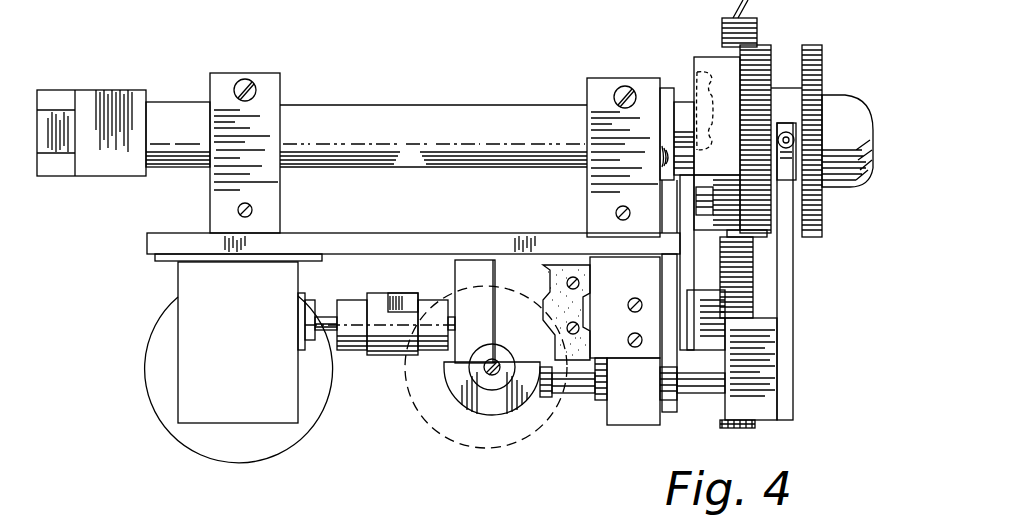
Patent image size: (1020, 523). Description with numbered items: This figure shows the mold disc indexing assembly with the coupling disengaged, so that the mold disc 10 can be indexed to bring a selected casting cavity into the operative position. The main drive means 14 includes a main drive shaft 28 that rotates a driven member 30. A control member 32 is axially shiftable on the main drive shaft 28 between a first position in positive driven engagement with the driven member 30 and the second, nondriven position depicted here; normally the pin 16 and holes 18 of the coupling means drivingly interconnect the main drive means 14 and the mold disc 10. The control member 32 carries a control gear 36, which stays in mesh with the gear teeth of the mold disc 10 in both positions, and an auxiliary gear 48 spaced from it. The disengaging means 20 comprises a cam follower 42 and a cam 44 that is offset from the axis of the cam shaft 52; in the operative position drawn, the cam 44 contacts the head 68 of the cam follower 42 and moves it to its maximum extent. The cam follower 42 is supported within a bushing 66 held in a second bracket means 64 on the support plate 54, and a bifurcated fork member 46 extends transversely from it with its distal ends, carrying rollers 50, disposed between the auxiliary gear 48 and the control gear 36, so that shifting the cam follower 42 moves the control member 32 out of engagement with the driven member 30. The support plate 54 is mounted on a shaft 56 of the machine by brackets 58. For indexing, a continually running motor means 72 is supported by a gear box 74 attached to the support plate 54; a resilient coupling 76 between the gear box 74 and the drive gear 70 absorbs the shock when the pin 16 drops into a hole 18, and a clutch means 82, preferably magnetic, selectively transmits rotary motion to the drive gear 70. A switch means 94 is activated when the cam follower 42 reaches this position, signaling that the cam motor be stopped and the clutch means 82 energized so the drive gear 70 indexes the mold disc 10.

The mold disc 10 is at (123, 306).
The main drive means 14 is at (682, 73).
The pin 16 is at (690, 148).
The holes 18 is at (710, 108).
The disengaging means 20 is at (543, 437).
The main drive shaft 28 is at (682, 176).
The driven member 30 is at (667, 88).
The control member 32 is at (845, 90).
The control gear 36 is at (772, 55).
The cam follower 42 is at (580, 383).
The cam 44 is at (465, 407).
The fork member 46 is at (792, 335).
The auxiliary gear 48 is at (822, 227).
The rollers 50 is at (798, 135).
The cam shaft 52 is at (484, 363).
The support plate 54 is at (393, 242).
The shaft 56 is at (435, 120).
The brackets 58 is at (272, 96).
The second bracket means 64 is at (613, 420).
The bushing 66 is at (655, 410).
The head 68 is at (540, 400).
The drive gear 70 is at (747, 288).
The motor means 72 is at (148, 367).
The gear box 74 is at (290, 393).
The resilient coupling 76 is at (380, 312).
The clutch means 82 is at (460, 271).
The switch means 94 is at (563, 265).